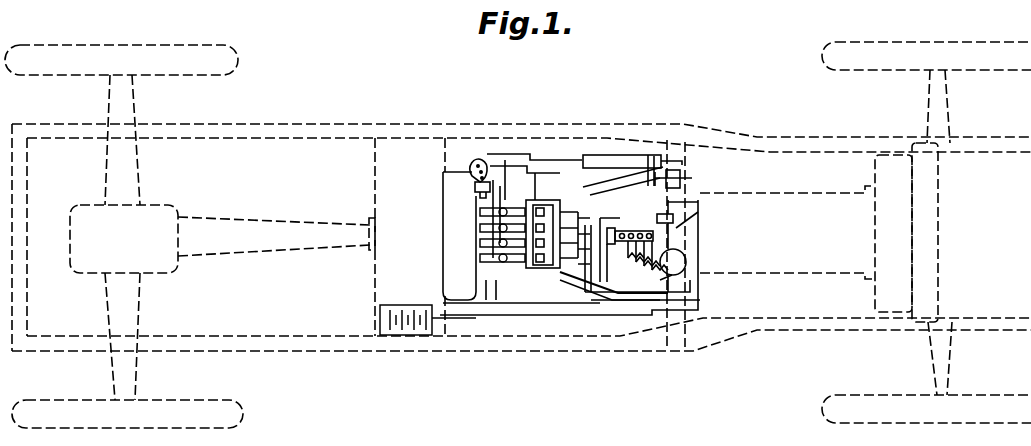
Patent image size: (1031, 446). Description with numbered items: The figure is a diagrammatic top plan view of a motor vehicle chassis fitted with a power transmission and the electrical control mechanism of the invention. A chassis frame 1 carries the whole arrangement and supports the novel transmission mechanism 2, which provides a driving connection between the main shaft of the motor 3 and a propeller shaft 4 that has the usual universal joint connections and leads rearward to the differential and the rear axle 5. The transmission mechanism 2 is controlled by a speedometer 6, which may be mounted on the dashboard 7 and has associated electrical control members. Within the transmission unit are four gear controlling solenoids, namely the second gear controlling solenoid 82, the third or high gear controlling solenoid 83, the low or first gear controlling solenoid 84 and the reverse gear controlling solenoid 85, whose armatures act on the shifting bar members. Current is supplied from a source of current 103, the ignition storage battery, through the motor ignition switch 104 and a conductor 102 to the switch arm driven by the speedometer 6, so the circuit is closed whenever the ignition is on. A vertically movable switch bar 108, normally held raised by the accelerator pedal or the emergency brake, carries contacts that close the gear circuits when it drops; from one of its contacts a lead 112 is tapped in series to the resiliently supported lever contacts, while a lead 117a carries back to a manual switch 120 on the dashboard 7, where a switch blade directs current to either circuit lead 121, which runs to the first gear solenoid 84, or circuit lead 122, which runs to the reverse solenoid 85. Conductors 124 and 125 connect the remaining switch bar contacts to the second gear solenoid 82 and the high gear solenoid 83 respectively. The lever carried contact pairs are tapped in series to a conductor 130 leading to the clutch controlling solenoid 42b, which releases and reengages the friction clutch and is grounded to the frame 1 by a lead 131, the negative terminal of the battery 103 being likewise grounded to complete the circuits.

The chassis frame 1 is at (340, 124).
The transmission mechanism 2 is at (520, 197).
The motor 3 is at (784, 193).
The propeller shaft 4 is at (316, 222).
The rear axle 5 is at (142, 205).
The speedometer 6 is at (686, 262).
The dashboard 7 is at (688, 332).
The clutch controlling solenoid 42b is at (476, 190).
The second gear controlling solenoid 82 is at (480, 258).
The third or high gear controlling solenoid 83 is at (480, 243).
The low or first gear controlling solenoid 84 is at (490, 228).
The reverse gear controlling solenoid 85 is at (480, 214).
The conductor 102 is at (505, 316).
The source of current 103 is at (405, 305).
The motor ignition switch 104 is at (674, 220).
The switch bar 108 is at (632, 230).
The lead 112 is at (588, 194).
The lead 117a is at (684, 180).
The manual switch 120 is at (624, 160).
The circuit lead 121 is at (654, 152).
The circuit lead 122 is at (683, 160).
The conductor 124 is at (532, 286).
The conductor 125 is at (556, 291).
The conductor 130 is at (506, 158).
The lead 131 is at (470, 168).